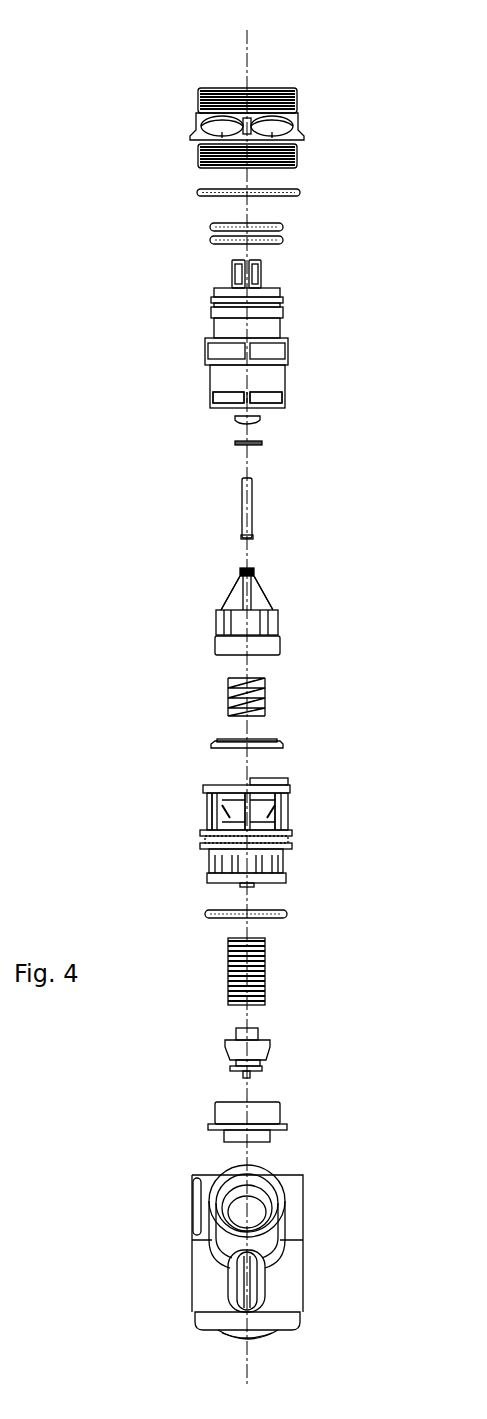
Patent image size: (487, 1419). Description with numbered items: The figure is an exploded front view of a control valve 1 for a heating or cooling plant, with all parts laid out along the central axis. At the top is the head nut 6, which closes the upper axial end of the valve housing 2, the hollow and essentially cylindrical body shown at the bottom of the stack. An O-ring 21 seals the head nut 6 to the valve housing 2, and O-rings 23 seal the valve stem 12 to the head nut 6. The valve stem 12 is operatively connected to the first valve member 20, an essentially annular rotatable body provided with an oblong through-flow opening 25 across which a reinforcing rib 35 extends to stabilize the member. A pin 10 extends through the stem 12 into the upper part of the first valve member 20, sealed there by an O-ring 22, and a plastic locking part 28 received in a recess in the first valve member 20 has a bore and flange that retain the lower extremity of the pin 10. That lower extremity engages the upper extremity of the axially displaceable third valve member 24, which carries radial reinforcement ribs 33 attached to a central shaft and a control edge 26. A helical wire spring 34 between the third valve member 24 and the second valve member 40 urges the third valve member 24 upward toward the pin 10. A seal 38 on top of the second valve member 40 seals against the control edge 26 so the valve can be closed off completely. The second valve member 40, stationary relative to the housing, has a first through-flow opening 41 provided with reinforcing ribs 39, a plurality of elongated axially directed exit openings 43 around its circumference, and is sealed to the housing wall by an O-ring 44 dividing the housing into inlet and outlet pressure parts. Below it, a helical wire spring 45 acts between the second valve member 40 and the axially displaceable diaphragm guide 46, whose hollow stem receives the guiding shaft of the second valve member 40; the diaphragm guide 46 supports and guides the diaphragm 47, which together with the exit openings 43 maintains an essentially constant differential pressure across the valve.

The control valve 1 is at (310, 212).
The valve housing 2 is at (195, 1278).
The head nut 6 is at (197, 135).
The pin 10 is at (252, 513).
The valve stem 12 is at (262, 272).
The first valve member 20 is at (214, 333).
The O-ring 21 is at (205, 190).
The O-ring 22 is at (238, 415).
The O-rings 23 is at (210, 227).
The third valve member 24 is at (218, 643).
The through-flow opening 25 is at (218, 397).
The control edge 26 is at (262, 655).
The locking part 28 is at (262, 443).
The radial reinforcement ribs 33 is at (227, 597).
The helical wire spring 34 is at (258, 700).
The reinforcing rib 35 is at (247, 397).
The seal 38 is at (215, 742).
The reinforcing ribs 39 is at (288, 812).
The second valve member 40 is at (203, 832).
The first through-flow opening 41 is at (222, 812).
The exit openings 43 is at (280, 860).
The O-ring 44 is at (262, 914).
The helical wire spring 45 is at (258, 967).
The diaphragm guide 46 is at (262, 1050).
The diaphragm 47 is at (215, 1115).